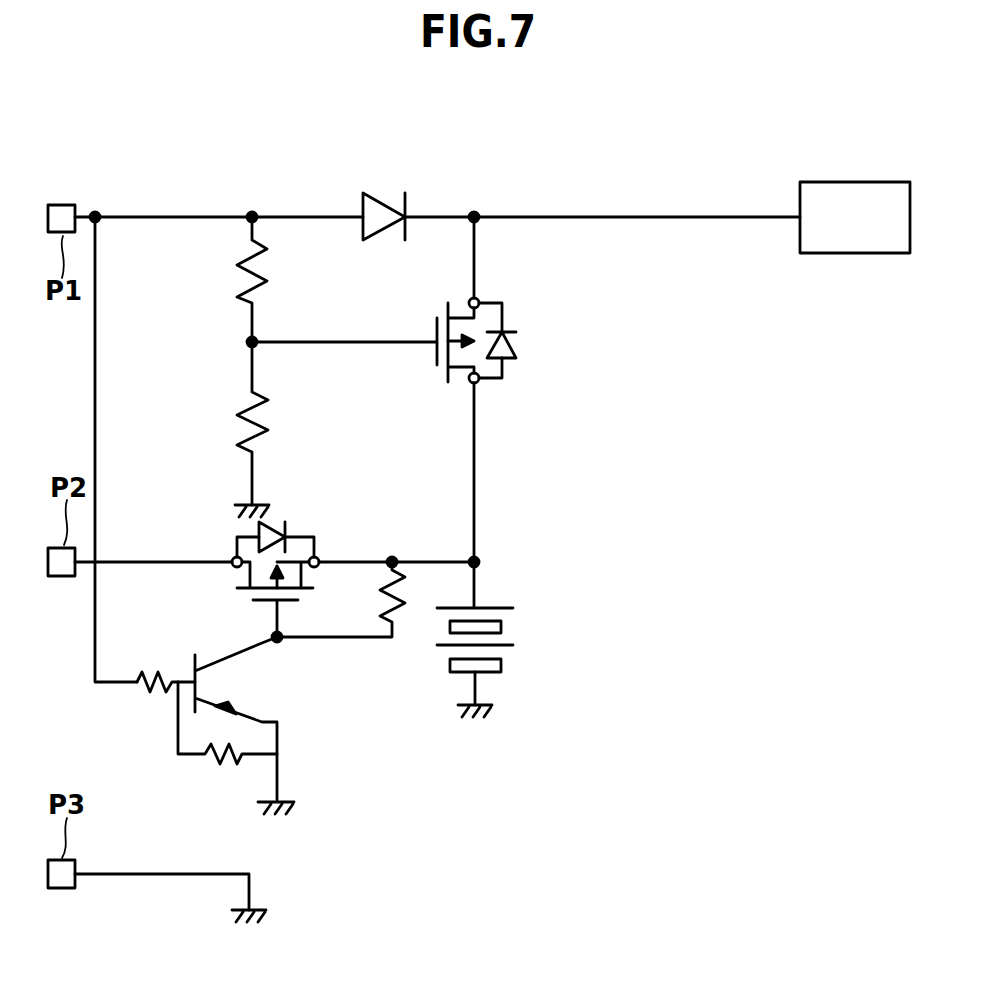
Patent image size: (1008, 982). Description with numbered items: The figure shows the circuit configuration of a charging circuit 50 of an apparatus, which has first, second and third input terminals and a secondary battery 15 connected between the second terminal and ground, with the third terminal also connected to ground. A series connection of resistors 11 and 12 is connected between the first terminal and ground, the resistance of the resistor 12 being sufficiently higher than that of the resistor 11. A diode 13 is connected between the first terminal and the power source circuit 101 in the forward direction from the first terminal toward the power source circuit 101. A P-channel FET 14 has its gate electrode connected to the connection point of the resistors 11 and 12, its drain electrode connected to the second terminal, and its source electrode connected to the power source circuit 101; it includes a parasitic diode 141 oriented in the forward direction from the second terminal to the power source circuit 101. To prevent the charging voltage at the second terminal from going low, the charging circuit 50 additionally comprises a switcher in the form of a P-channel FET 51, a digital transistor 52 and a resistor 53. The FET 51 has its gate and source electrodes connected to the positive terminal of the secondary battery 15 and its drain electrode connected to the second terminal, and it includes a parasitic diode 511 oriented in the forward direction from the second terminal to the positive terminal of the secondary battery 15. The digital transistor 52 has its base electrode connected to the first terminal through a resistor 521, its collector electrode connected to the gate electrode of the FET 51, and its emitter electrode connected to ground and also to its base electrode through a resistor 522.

The resistor 11 is at (240, 275).
The resistor 12 is at (243, 417).
The diode 13 is at (383, 197).
The FET 14 is at (436, 326).
The parasitic diode 141 is at (515, 360).
The secondary battery 15 is at (497, 607).
The charging circuit 50 is at (550, 170).
The FET 51 is at (265, 604).
The parasitic diode 511 is at (272, 522).
The digital transistor 52 is at (180, 665).
The resistor 521 is at (127, 675).
The resistor 522 is at (207, 758).
The resistor 53 is at (394, 613).
The power source circuit 101 is at (800, 200).